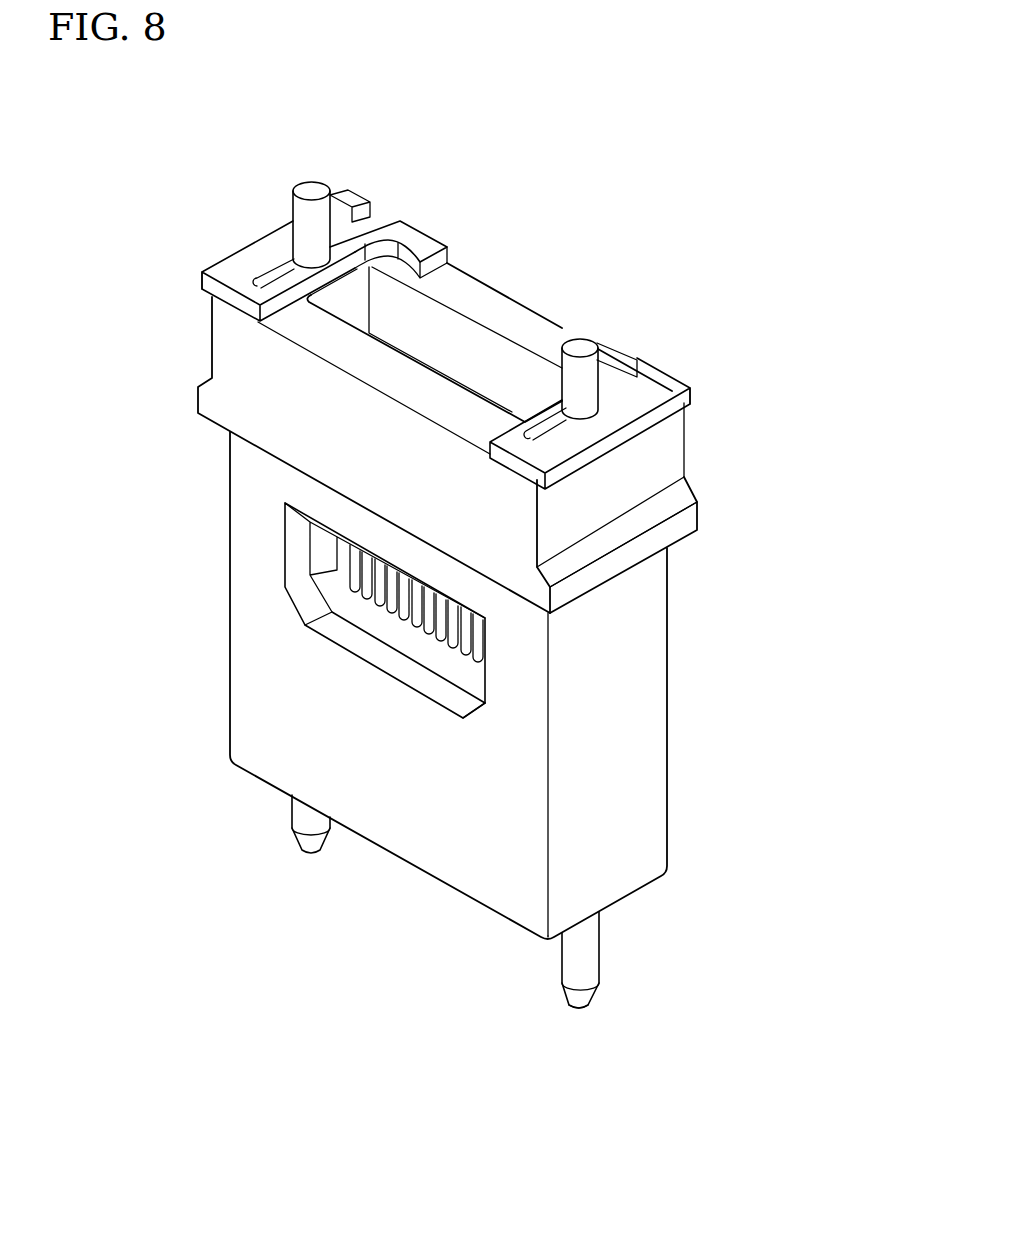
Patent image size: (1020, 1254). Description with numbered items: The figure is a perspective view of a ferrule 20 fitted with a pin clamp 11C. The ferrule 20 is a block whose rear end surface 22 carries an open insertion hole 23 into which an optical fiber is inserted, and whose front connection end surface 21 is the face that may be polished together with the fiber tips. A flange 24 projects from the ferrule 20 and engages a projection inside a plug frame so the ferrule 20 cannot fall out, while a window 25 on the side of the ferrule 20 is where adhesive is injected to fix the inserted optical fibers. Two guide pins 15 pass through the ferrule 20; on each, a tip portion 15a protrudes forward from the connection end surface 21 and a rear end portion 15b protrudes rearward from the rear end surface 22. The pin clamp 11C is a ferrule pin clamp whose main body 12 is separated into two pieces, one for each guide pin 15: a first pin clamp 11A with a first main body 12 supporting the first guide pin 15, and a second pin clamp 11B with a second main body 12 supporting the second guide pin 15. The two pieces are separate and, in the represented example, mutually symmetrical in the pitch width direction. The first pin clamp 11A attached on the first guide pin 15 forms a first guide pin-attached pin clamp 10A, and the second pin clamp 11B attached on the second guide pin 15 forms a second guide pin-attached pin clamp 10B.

The first guide pin-attached pin clamp 10A is at (201, 257).
The second guide pin-attached pin clamp 10B is at (700, 394).
The first pin clamp 11A is at (421, 231).
The second pin clamp 11B is at (675, 314).
The pin clamp 11C is at (478, 299).
The main body 12 is at (262, 250).
The guide pin 15 is at (289, 820).
The tip portion 15a is at (580, 1008).
The rear end portion 15b is at (312, 190).
The ferrule 20 is at (430, 589).
The connection end surface 21 is at (633, 897).
The rear end surface 22 is at (325, 342).
The insertion hole 23 is at (470, 340).
The flange 24 is at (680, 528).
The window 25 is at (345, 636).